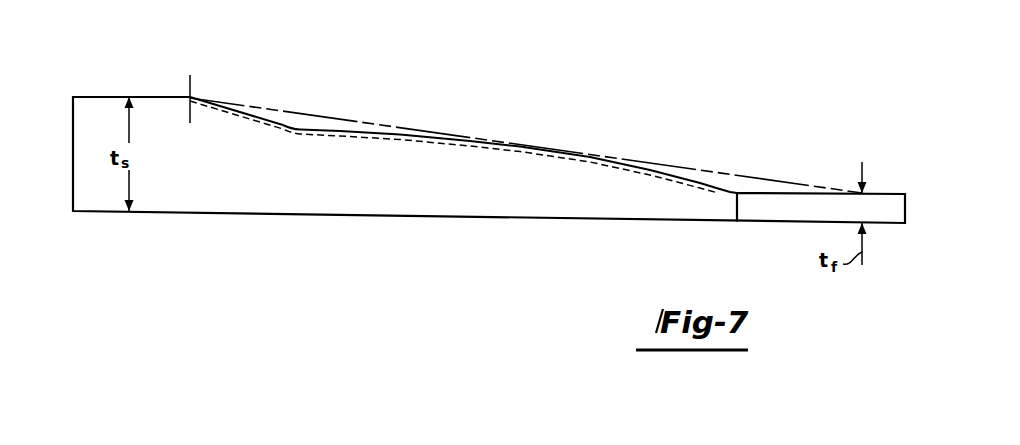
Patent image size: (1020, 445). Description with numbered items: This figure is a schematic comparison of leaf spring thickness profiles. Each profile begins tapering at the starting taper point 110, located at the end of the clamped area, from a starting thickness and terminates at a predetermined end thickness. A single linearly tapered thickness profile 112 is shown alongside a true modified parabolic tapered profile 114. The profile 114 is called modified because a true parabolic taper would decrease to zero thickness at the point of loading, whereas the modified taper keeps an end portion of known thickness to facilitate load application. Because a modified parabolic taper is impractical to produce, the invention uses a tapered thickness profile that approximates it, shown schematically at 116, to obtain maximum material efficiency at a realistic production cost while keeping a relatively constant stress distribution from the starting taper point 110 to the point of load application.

The starting taper point 110 is at (193, 85).
The linearly tapered thickness profile 112 is at (331, 114).
The modified parabolic tapered profile 114 is at (288, 118).
The approximated modified parabolic taper profile 116 is at (282, 134).